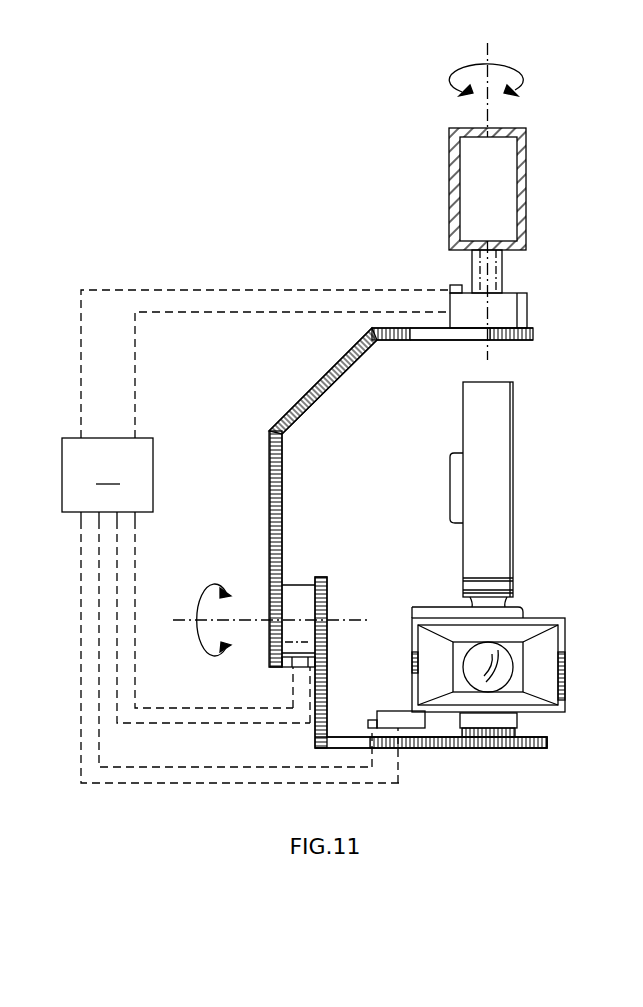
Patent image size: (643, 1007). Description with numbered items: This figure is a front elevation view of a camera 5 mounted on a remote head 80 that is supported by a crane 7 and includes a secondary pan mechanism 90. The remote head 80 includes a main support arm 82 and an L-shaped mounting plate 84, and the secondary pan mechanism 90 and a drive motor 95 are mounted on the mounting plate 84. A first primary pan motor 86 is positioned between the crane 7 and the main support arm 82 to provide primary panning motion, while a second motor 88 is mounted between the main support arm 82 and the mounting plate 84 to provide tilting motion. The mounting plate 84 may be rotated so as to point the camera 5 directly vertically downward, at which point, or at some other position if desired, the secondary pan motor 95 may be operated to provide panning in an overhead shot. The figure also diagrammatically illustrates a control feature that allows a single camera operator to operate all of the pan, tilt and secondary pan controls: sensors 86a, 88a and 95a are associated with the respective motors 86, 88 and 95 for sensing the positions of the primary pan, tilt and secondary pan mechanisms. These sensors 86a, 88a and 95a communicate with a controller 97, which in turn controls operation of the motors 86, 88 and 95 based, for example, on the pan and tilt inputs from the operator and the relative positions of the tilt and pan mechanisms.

The camera 5 is at (531, 597).
The crane 7 is at (526, 170).
The remote head 80 is at (227, 431).
The main support arm 82 is at (298, 412).
The L-shaped mounting plate 84 is at (527, 750).
The first primary pan motor 86 is at (515, 313).
The sensor 86a is at (450, 285).
The second motor 88 is at (303, 598).
The sensor 88a is at (307, 666).
The secondary pan mechanism 90 is at (518, 723).
The drive motor 95 is at (393, 716).
The sensor 95a is at (370, 722).
The controller 97 is at (256, 536).